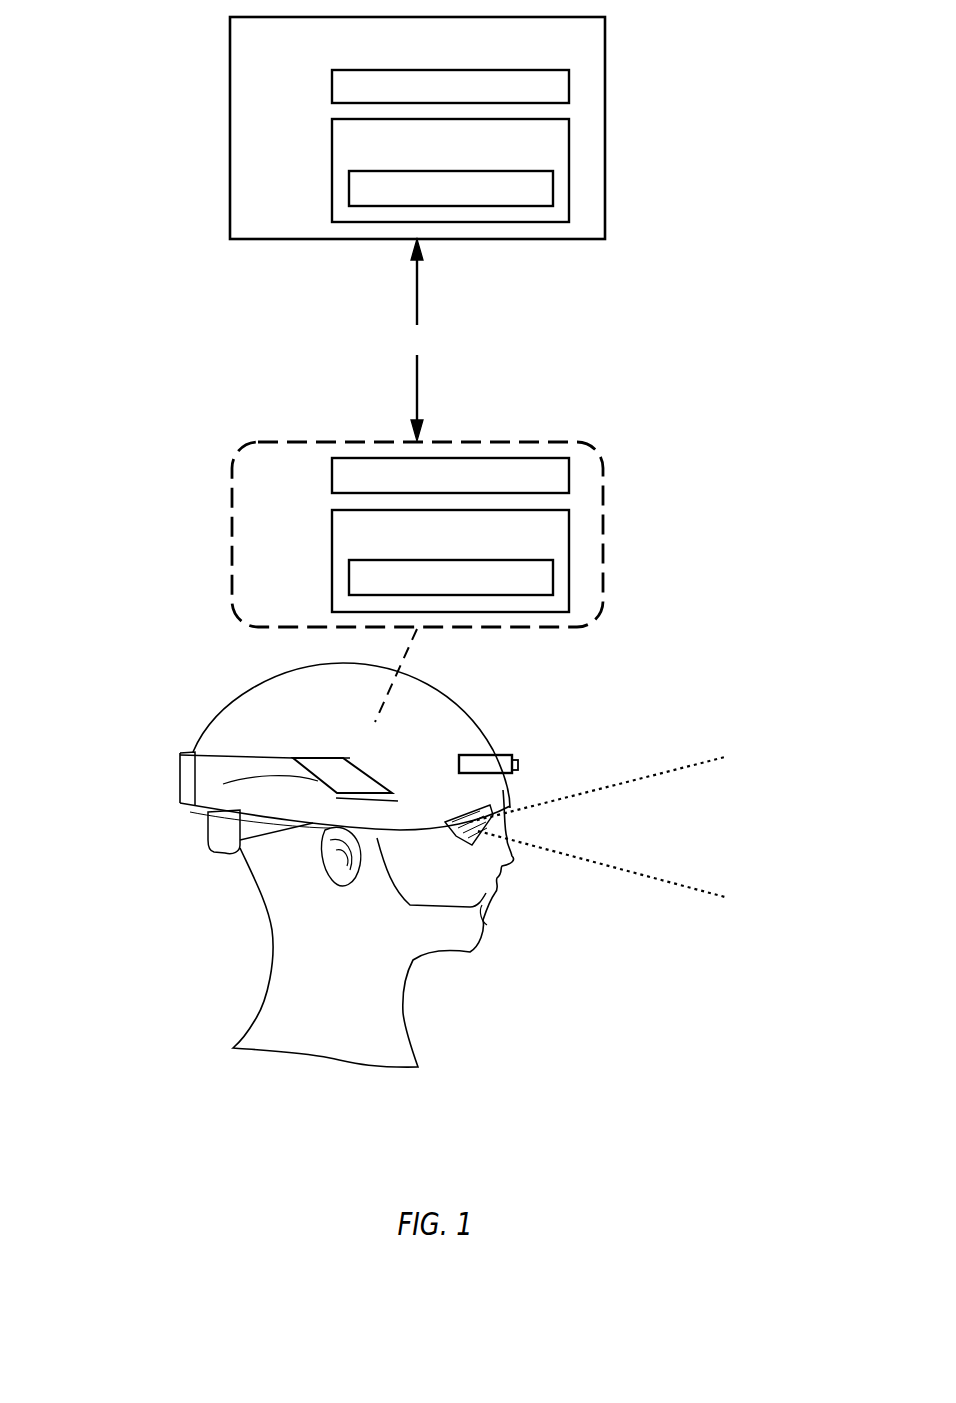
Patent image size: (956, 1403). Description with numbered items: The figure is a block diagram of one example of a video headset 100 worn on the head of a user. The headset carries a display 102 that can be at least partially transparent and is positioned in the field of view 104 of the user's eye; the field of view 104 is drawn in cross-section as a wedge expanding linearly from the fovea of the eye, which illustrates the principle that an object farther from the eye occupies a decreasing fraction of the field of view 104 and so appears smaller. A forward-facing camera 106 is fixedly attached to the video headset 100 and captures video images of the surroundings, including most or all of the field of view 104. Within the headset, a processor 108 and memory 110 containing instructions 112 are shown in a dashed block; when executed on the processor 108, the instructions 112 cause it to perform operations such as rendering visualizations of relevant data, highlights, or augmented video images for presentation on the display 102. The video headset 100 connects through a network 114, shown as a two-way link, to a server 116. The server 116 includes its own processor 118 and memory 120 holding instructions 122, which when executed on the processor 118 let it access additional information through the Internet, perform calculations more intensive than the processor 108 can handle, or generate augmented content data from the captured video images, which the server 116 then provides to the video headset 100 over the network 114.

The video headset 100 is at (333, 746).
The display 102 is at (470, 840).
The field of view 104 is at (640, 827).
The forward-facing camera 106 is at (517, 755).
The processor 108 is at (332, 472).
The memory 110 is at (332, 531).
The instructions 112 is at (349, 575).
The network 114 is at (358, 337).
The server 116 is at (231, 38).
The processor 118 is at (332, 82).
The memory 120 is at (332, 141).
The instructions 122 is at (349, 185).